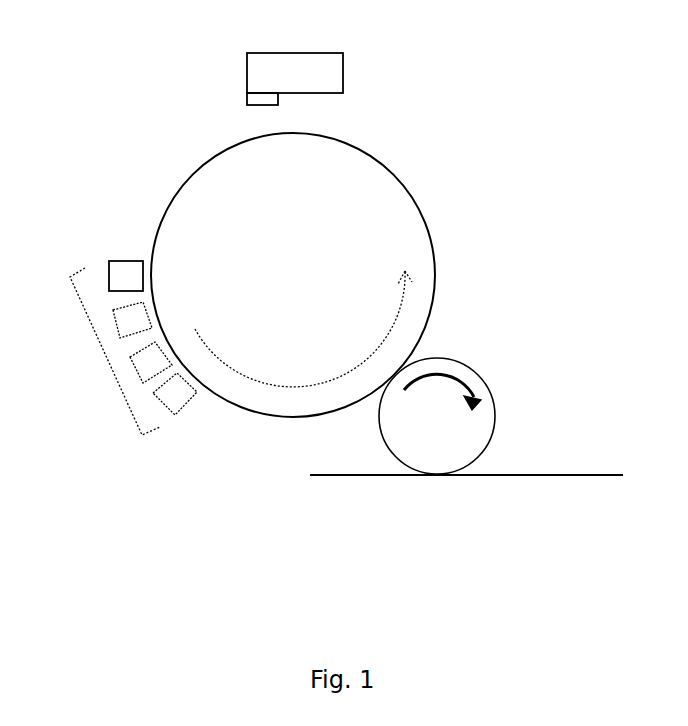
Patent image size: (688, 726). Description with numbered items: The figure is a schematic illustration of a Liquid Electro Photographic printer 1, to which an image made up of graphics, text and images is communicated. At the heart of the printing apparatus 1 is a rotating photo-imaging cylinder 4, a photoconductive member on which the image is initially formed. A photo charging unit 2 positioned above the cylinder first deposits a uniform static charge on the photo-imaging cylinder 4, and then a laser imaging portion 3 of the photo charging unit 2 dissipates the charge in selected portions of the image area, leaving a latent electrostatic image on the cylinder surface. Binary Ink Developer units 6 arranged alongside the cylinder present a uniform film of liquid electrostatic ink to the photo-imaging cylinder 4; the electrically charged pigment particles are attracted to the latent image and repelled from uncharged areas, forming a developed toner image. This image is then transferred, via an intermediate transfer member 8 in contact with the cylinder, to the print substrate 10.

The Liquid Electro Photographic printer 1 is at (116, 128).
The photo charging unit 2 is at (303, 53).
The laser imaging portion 3 is at (247, 100).
The photo-imaging cylinder 4 is at (287, 294).
The Binary Ink Developer units 6 is at (105, 358).
The intermediate transfer member 8 is at (433, 432).
The print substrate 10 is at (565, 473).